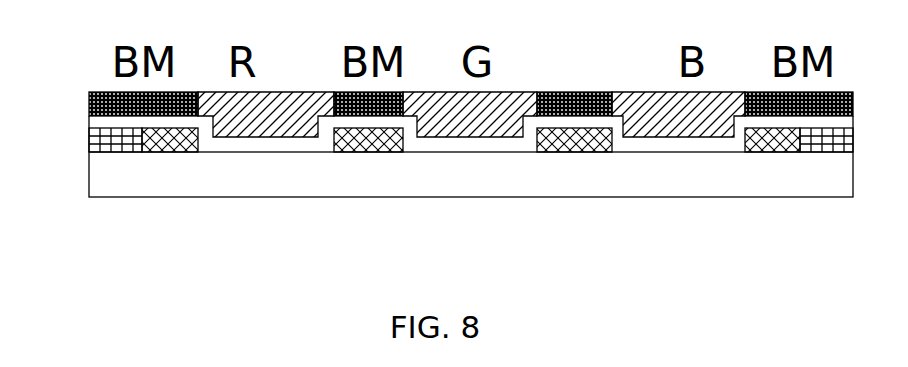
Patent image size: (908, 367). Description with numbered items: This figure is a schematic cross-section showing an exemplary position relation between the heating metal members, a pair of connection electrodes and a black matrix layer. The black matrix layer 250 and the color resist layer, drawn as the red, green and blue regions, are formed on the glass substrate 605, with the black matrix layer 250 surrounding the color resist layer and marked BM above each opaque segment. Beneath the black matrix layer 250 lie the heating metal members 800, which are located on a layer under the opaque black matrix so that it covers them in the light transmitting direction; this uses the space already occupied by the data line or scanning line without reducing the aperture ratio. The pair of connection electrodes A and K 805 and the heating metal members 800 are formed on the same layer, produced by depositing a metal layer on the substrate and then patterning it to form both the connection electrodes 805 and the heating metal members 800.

The black matrix layer 250 is at (89, 93).
The glass substrate 605 is at (103, 184).
The pair of connection electrodes A and K 805 is at (110, 142).
The heating metal member 800 is at (175, 142).